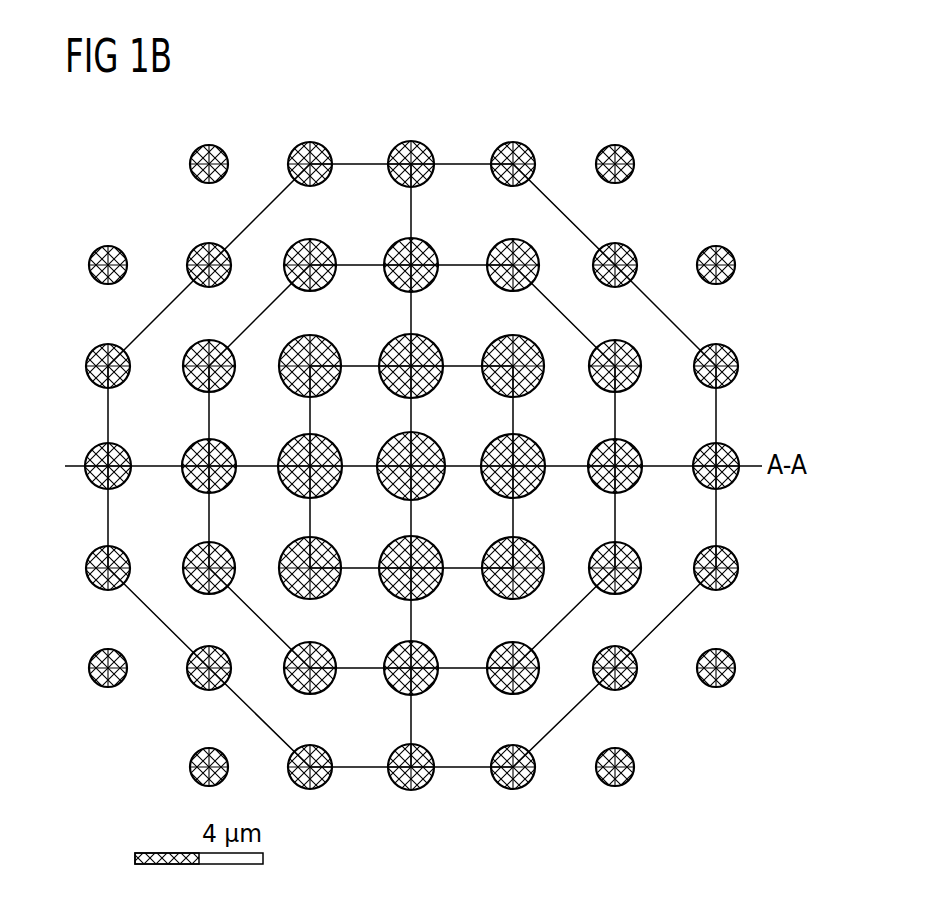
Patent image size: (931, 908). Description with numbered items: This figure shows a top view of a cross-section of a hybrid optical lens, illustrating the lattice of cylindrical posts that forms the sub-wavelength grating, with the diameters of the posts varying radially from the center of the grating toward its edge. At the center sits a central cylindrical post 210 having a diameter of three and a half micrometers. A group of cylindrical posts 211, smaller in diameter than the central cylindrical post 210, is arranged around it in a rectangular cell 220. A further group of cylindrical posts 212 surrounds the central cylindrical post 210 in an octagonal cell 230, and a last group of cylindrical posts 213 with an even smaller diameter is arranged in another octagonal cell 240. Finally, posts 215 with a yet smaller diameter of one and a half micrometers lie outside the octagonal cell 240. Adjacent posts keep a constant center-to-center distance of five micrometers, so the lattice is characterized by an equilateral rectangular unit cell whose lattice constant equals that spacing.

The central cylindrical post 210 is at (435, 450).
The cylindrical posts 211 is at (336, 450).
The cylindrical posts 212 is at (247, 434).
The cylindrical posts 213 is at (147, 434).
The posts 215 is at (628, 150).
The rectangular cell 220 is at (462, 364).
The octagonal cell 230 is at (462, 263).
The octagonal cell 240 is at (465, 162).